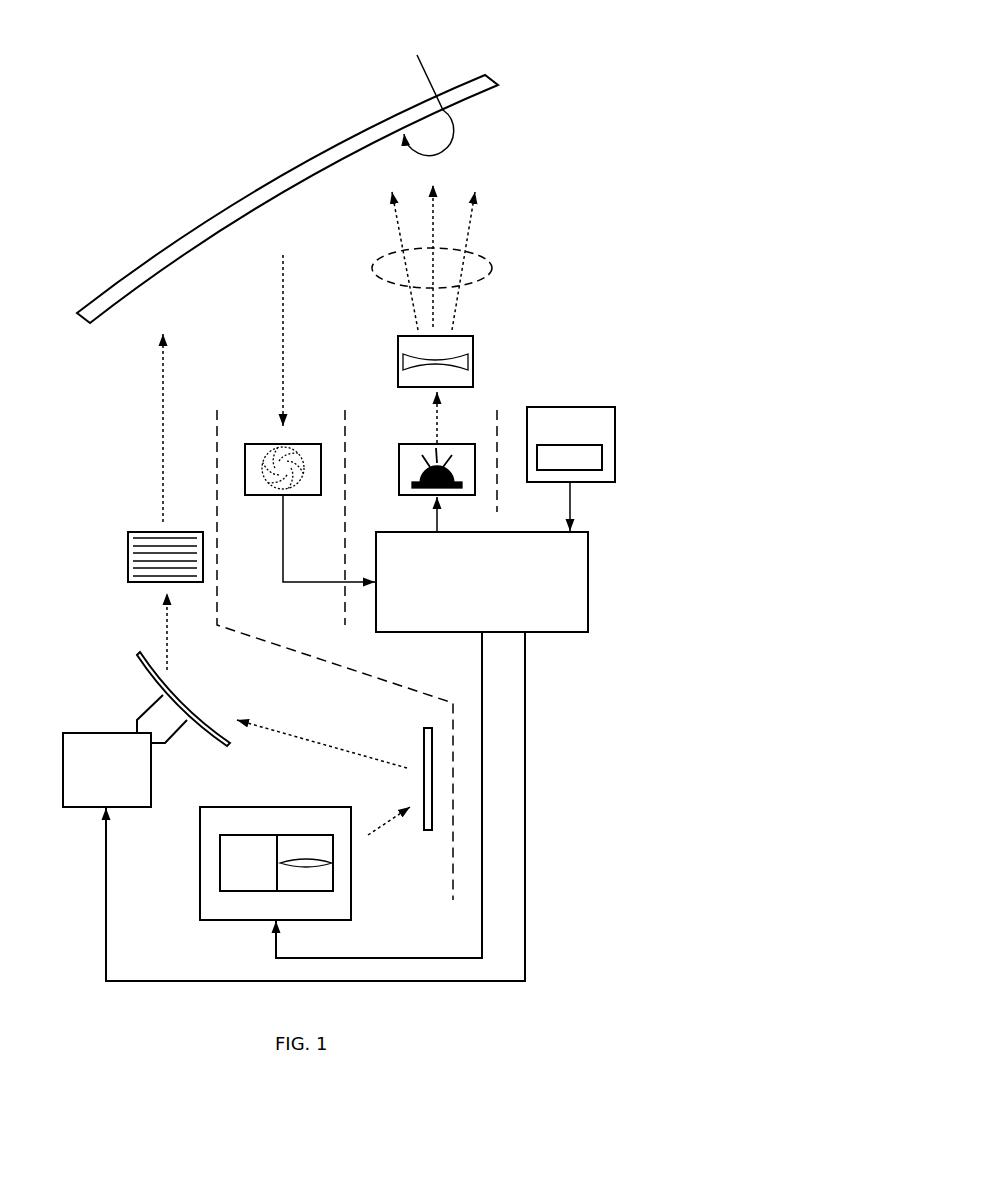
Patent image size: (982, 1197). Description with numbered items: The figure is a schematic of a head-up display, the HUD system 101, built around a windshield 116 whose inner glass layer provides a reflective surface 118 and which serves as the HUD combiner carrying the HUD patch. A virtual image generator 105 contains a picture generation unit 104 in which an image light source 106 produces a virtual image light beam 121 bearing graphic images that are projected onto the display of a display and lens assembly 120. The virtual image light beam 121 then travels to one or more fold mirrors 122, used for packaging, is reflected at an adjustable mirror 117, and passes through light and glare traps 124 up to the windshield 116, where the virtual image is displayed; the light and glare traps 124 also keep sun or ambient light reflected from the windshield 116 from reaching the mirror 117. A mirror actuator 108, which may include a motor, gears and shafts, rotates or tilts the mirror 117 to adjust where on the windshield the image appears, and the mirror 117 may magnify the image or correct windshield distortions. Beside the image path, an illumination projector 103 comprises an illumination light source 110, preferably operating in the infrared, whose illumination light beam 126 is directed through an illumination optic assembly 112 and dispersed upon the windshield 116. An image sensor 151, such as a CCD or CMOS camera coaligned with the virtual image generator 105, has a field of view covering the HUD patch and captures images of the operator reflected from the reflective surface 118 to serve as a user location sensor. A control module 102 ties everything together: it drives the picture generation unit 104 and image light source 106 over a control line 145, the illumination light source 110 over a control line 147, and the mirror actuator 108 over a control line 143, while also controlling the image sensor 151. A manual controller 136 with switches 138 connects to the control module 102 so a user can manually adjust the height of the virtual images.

The HUD system 101 is at (630, 181).
The control module 102 is at (465, 596).
The illumination projector 103 is at (524, 307).
The picture generation unit 104 is at (337, 807).
The virtual image generator 105 is at (72, 548).
The image light source 106 is at (265, 835).
The mirror actuator 108 is at (73, 733).
The illumination light source 110 is at (399, 463).
The illumination optic assembly 112 is at (473, 364).
The windshield 116 is at (221, 208).
The adjustable mirror 117 is at (135, 663).
The reflective surface 118 is at (418, 98).
The display and lens assembly 120 is at (325, 835).
The virtual image light beam 121 is at (163, 460).
The fold mirror 122 is at (425, 728).
The light and glare traps 124 is at (140, 533).
The illumination light beam 126 is at (482, 256).
The manual controller 136 is at (537, 407).
The switches 138 is at (537, 445).
The control line 143 is at (528, 783).
The control line 145 is at (480, 686).
The control line 147 is at (435, 522).
The image sensor 151 is at (265, 495).